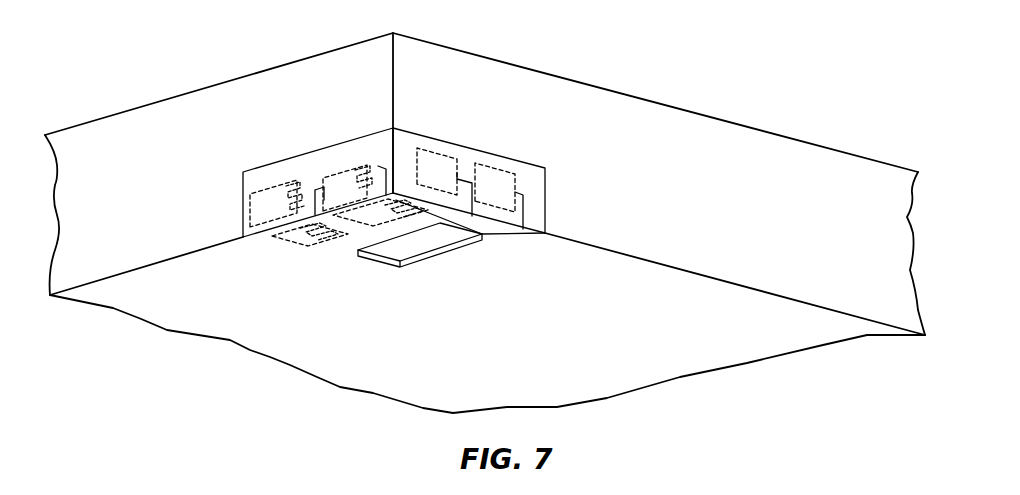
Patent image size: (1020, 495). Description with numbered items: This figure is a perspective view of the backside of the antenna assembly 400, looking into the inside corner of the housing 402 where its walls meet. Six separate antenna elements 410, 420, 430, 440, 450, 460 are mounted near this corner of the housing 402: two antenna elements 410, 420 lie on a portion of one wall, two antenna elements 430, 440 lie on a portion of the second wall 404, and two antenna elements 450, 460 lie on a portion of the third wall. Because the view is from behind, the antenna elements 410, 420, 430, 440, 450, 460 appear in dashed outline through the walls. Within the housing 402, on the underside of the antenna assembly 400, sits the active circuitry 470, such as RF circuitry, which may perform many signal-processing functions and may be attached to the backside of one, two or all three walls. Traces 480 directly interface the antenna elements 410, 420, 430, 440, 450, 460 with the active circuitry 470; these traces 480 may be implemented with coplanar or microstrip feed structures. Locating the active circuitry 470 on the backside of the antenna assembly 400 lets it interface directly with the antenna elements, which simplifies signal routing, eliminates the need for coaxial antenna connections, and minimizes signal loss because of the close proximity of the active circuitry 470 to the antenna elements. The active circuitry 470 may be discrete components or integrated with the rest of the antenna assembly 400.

The antenna assembly 400 is at (470, 325).
The housing 402 is at (492, 59).
The second wall 404 is at (547, 182).
The antenna element 410 is at (287, 242).
The antenna element 420 is at (385, 233).
The antenna element 430 is at (282, 187).
The antenna element 440 is at (343, 170).
The antenna element 450 is at (435, 152).
The antenna element 460 is at (497, 163).
The active circuitry 470 is at (455, 248).
The traces 480 is at (390, 173).